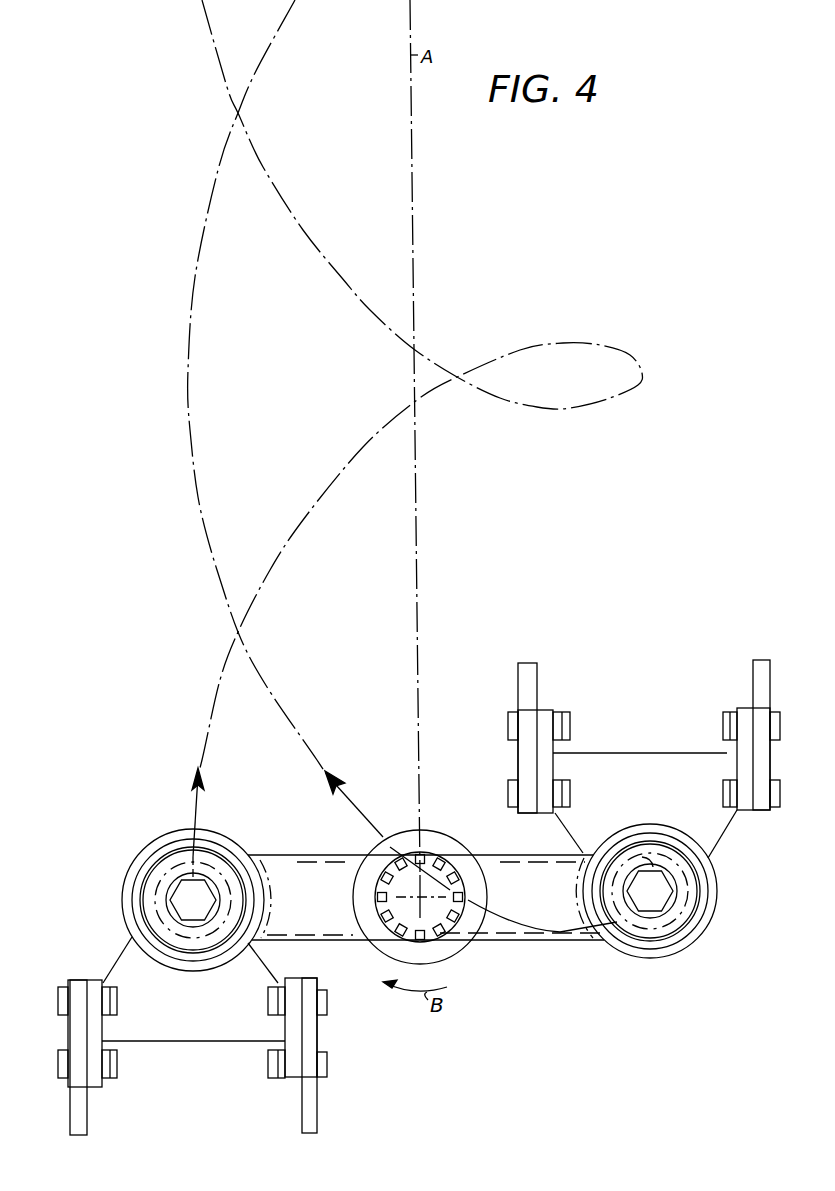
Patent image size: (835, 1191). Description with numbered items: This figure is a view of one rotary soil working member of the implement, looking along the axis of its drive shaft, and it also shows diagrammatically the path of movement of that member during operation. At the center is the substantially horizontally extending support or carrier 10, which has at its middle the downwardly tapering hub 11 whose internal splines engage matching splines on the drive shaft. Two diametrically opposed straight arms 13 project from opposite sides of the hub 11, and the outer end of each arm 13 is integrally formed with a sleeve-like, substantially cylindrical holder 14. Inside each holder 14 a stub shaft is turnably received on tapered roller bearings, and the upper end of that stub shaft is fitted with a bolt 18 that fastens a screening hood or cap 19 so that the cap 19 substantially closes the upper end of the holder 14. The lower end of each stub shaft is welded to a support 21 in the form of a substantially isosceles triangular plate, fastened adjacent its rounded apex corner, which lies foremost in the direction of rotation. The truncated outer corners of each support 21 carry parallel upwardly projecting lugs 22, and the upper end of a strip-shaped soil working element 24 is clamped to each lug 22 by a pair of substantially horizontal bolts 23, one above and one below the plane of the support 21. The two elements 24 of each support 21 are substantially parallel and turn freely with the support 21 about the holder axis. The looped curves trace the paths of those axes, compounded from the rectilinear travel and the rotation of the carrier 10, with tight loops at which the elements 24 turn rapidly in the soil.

The support or carrier 10 is at (481, 950).
The hub 11 is at (448, 846).
The arm 13 is at (345, 862).
The holder 14 is at (225, 843).
The bolt 18 is at (213, 915).
The screening hood or cap 19 is at (152, 885).
The support 21 is at (130, 957).
The lug 22 is at (93, 1087).
The bolt 23 is at (115, 1013).
The soil working element 24 is at (88, 1128).